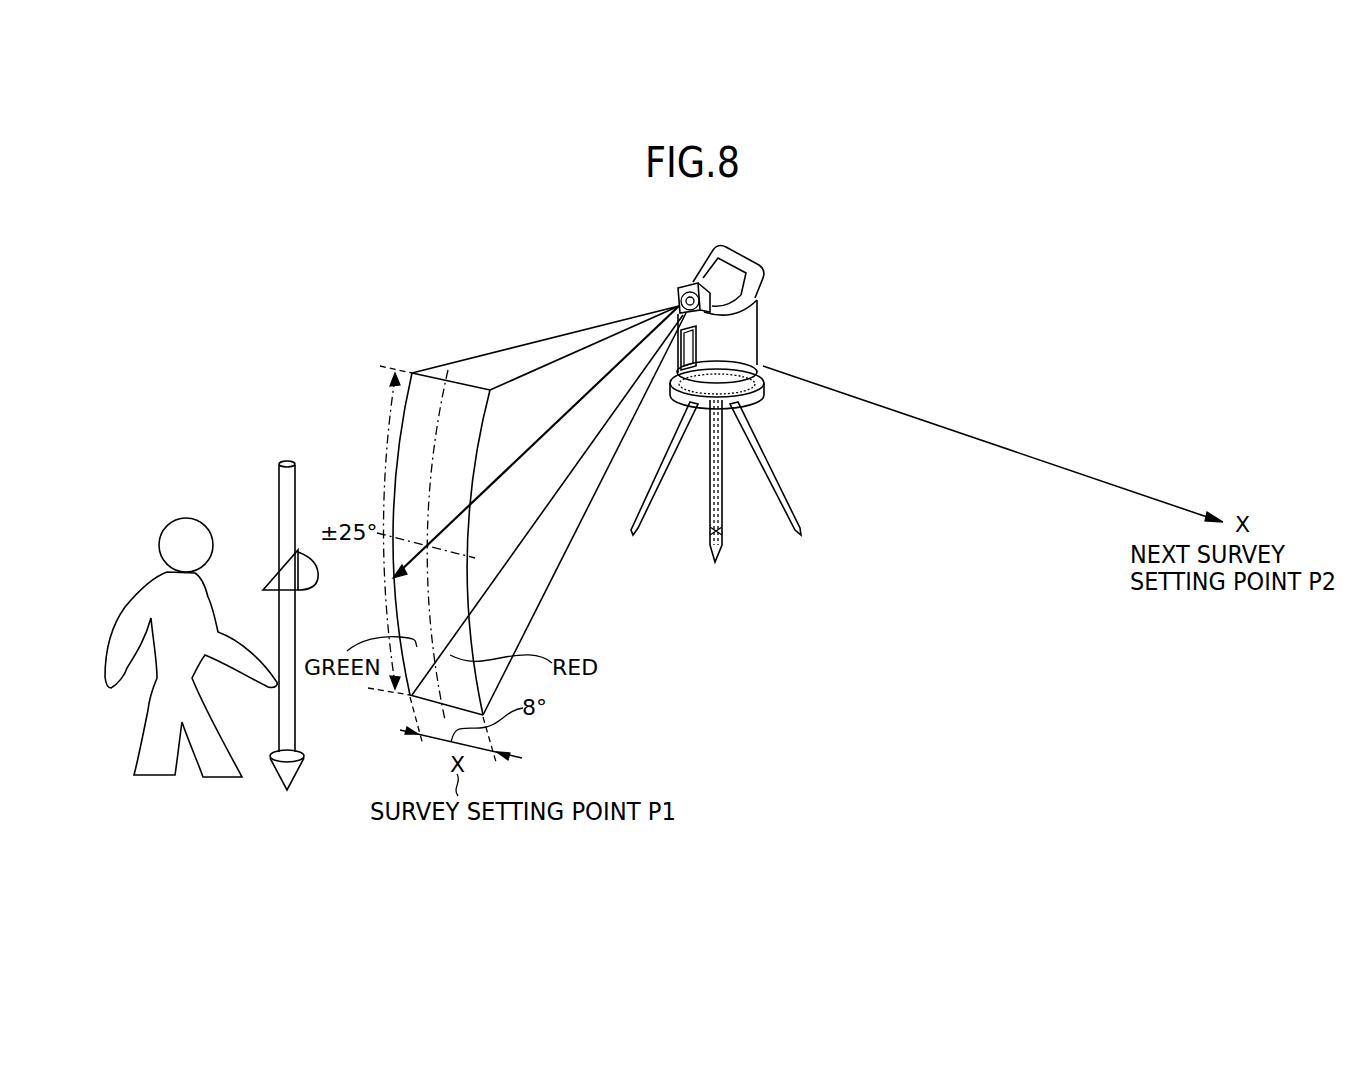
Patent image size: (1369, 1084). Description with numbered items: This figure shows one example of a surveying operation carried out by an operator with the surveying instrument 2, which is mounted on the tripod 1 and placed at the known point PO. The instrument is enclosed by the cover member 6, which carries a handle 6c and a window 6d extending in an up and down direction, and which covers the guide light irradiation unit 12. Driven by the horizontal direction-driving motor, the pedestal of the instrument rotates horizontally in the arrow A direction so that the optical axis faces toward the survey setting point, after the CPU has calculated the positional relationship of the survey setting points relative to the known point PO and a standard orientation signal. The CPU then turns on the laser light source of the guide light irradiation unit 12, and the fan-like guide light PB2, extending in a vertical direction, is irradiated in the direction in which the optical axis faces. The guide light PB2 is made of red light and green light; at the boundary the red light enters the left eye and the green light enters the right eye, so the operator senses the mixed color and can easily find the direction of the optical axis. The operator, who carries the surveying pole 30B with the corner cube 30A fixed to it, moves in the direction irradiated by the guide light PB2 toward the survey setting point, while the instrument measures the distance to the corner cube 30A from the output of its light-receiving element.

The tripod 1 is at (751, 376).
The surveying instrument 2 is at (785, 317).
The cover member 6 is at (725, 326).
The handle 6c is at (735, 261).
The window 6d is at (680, 369).
The guide light irradiation unit 12 is at (685, 300).
The corner cube 30A is at (303, 576).
The surveying pole 30B is at (290, 500).
The fan-like guide light PB2 is at (455, 427).
The known point PO is at (723, 528).
The arrow direction A is at (784, 410).